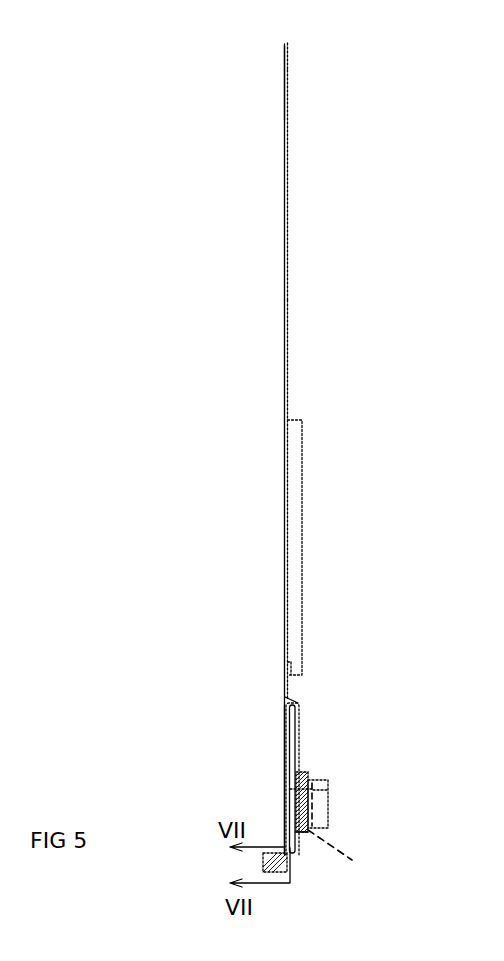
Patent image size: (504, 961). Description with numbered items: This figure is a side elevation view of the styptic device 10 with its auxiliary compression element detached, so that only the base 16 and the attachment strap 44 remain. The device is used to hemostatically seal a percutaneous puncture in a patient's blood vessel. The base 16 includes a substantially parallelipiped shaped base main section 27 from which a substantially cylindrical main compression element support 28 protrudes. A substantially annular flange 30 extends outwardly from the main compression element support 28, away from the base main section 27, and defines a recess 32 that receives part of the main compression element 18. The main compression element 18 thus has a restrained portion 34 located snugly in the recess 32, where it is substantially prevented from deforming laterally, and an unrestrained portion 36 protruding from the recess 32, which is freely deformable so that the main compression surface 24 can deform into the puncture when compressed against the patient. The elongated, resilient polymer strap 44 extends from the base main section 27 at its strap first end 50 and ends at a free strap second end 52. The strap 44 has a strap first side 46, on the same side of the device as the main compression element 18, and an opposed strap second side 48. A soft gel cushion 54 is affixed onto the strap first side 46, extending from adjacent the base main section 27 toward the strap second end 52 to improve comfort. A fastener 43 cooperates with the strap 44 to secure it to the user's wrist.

The styptic device 10 is at (342, 58).
The strap second end 52 is at (284, 44).
The strap second side 48 is at (282, 185).
The strap first side 46 is at (288, 158).
The strap 44 is at (303, 333).
The cushion 54 is at (298, 546).
The strap first end 50 is at (287, 701).
The base main section 27 is at (290, 729).
The base 16 is at (317, 733).
The annular flange 30 is at (308, 773).
The main compression element 18 is at (338, 786).
The main compression surface 24 is at (330, 810).
The unrestrained portion 36 is at (325, 802).
The restrained portion 34 is at (313, 789).
The recess 32 is at (348, 851).
The main compression element support 28 is at (303, 833).
The fastener 43 is at (228, 866).